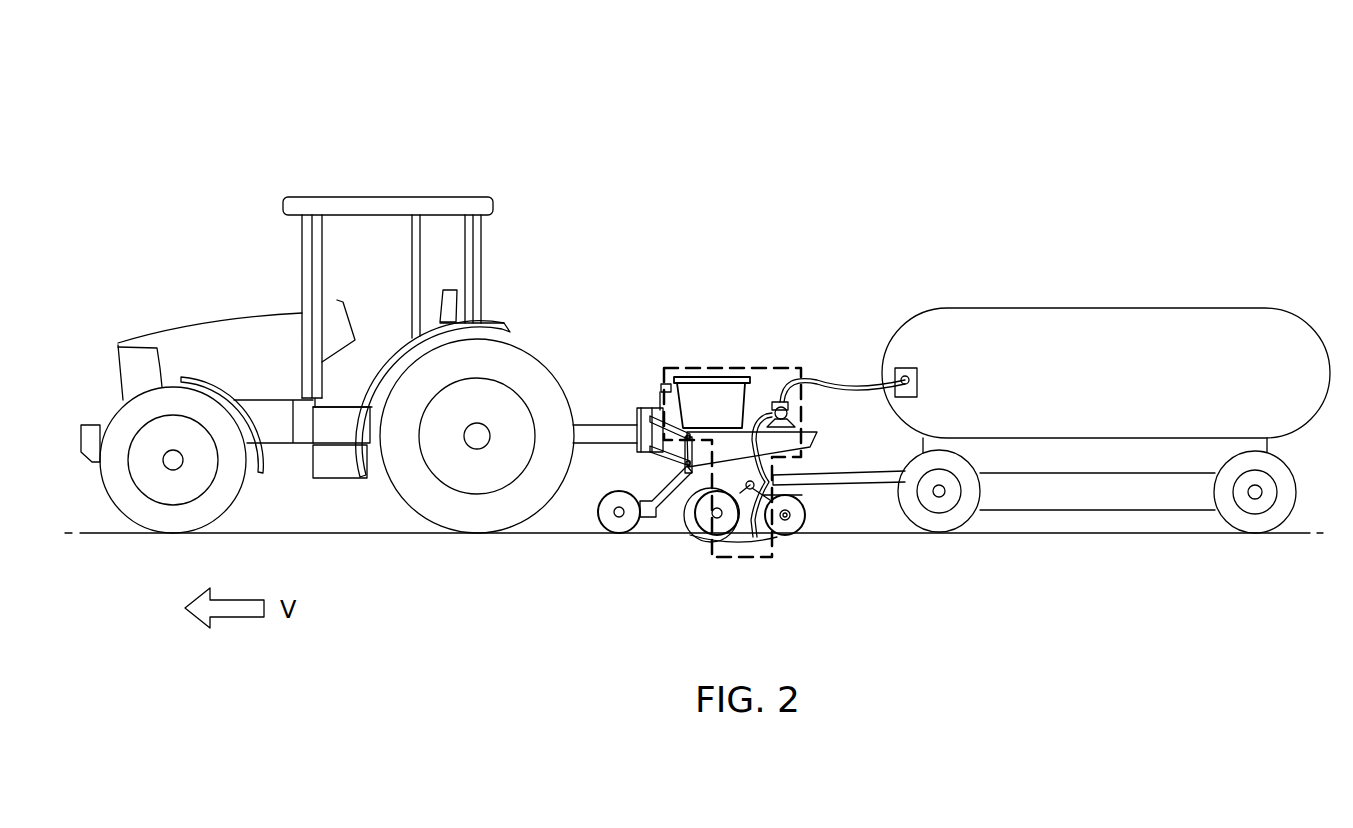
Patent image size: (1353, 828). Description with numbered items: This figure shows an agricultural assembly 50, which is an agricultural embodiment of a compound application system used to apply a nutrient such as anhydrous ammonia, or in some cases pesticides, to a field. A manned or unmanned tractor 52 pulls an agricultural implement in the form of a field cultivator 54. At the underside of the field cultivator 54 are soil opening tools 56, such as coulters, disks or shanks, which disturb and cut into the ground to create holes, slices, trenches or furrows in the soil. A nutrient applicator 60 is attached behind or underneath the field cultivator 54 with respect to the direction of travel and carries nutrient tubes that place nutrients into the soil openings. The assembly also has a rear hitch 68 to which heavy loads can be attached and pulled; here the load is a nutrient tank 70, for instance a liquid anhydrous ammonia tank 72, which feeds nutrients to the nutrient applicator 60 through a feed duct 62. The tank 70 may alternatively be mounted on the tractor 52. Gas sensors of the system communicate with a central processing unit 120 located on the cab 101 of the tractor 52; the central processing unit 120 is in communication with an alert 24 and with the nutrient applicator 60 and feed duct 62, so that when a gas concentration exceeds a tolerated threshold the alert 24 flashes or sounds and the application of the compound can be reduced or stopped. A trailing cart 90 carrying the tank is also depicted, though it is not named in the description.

The agricultural assembly 50 is at (698, 97).
The tractor 52 is at (405, 165).
The cab 101 is at (481, 203).
The central processing unit 120 is at (337, 317).
The alert 24 is at (450, 307).
The field cultivator 54 is at (720, 322).
The anhydrous ammonia tank 72 is at (733, 390).
The feed duct 62 is at (847, 378).
The soil opening tools 56 is at (613, 528).
The nutrient applicator 60 is at (788, 575).
The rear hitch 68 is at (857, 485).
The fluid cart 90 is at (1102, 232).
The nutrient tank 70 is at (1170, 308).